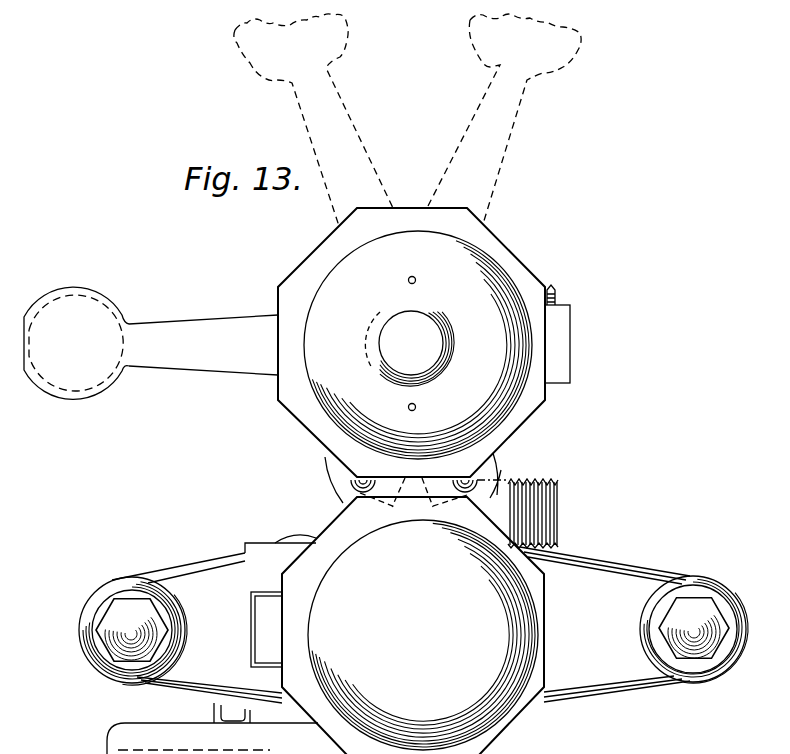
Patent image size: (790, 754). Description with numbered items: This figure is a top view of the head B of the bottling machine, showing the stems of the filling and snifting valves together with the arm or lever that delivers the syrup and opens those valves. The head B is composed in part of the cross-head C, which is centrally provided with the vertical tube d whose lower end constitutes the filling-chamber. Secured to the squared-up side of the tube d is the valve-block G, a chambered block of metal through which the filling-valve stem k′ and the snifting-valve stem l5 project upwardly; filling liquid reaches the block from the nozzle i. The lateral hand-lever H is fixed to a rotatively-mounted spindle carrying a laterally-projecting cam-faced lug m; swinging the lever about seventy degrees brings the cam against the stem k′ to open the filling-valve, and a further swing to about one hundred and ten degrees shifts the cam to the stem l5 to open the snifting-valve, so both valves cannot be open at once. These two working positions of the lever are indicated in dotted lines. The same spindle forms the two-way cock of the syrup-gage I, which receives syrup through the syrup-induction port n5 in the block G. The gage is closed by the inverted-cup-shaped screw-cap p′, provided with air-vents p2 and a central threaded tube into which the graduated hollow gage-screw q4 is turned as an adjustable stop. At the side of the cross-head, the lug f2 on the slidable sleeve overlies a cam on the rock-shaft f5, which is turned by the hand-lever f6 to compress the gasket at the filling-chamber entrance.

The lateral hand-lever H is at (151, 343).
The syrup-gage I is at (403, 342).
The screw-cap p′ is at (418, 345).
The air-vents p2 is at (426, 404).
The hollow gage-screw q4 is at (409, 348).
The syrup-induction port n5 is at (557, 291).
The cam-faced lug m is at (565, 355).
The head B is at (385, 600).
The valve-block G is at (338, 502).
The snifting-valve stem l5 is at (352, 483).
The filling-valve stem k′ is at (473, 480).
The nozzle i is at (541, 513).
The vertical tube d is at (423, 635).
The cross-head C is at (413, 635).
The rock-shaft f5 is at (287, 540).
The laterally-projecting lug f2 is at (262, 622).
The hand-lever f6 is at (212, 738).